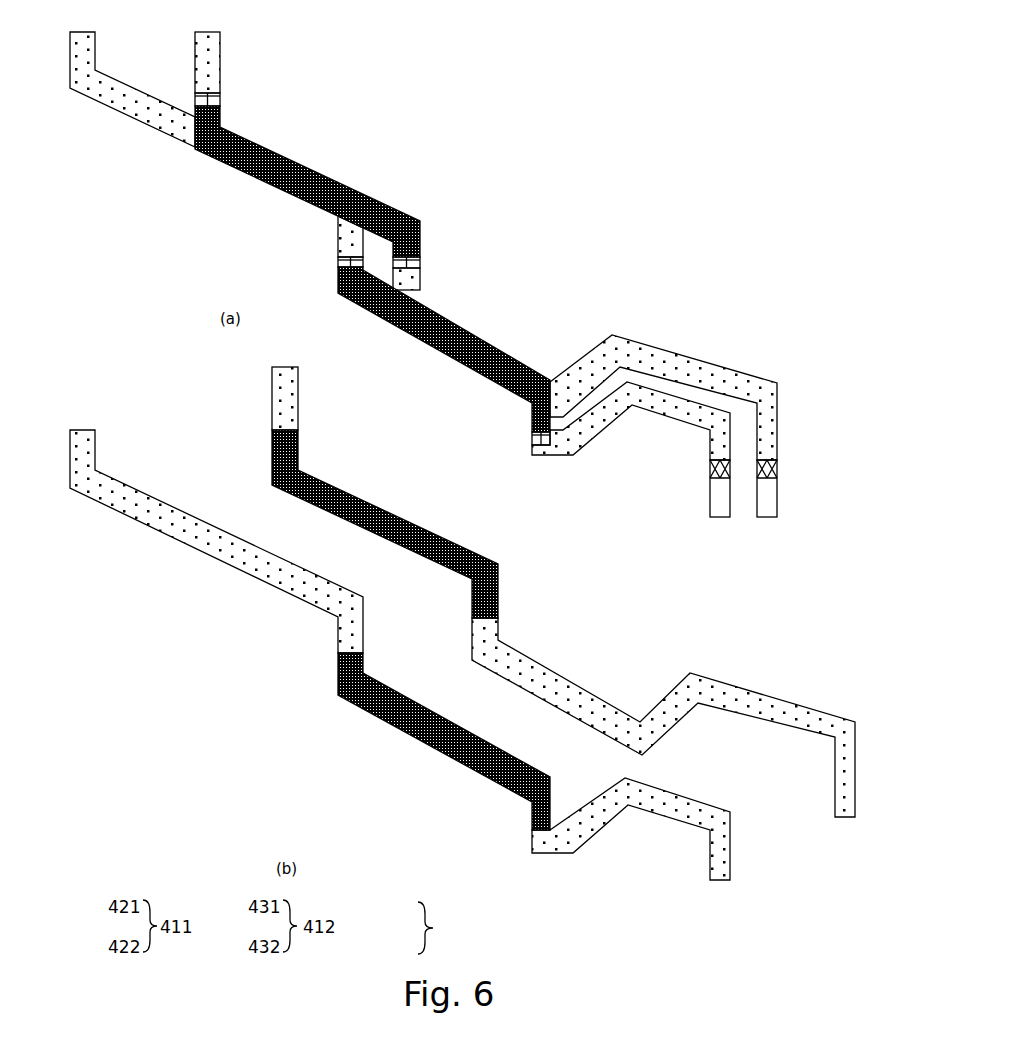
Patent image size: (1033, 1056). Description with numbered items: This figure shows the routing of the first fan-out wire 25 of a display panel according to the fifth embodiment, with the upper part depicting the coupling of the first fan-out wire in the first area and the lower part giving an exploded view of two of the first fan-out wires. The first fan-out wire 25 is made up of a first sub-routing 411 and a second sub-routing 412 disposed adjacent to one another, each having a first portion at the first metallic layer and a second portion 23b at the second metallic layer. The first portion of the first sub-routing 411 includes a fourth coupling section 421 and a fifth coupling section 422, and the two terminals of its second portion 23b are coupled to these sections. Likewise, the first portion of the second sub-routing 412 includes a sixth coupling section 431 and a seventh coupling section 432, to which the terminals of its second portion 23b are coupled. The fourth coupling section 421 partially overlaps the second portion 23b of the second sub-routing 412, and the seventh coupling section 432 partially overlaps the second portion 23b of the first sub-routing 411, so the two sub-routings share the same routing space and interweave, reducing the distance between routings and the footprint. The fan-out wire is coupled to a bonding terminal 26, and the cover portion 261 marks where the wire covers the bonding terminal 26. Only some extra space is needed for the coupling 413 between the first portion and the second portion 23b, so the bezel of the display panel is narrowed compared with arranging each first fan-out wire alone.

The first sub-routing 411 is at (118, 93).
The second sub-routing 412 is at (210, 75).
The coupling 413 is at (217, 100).
The bonding terminal 26 is at (720, 500).
The cover portion 261 is at (777, 470).
The fourth coupling section 421 is at (132, 503).
The fifth coupling section 422 is at (675, 807).
The sixth coupling section 431 is at (280, 409).
The seventh coupling section 432 is at (732, 695).
The second portion 23b is at (408, 522).
The first fan-out wire 25 is at (426, 929).